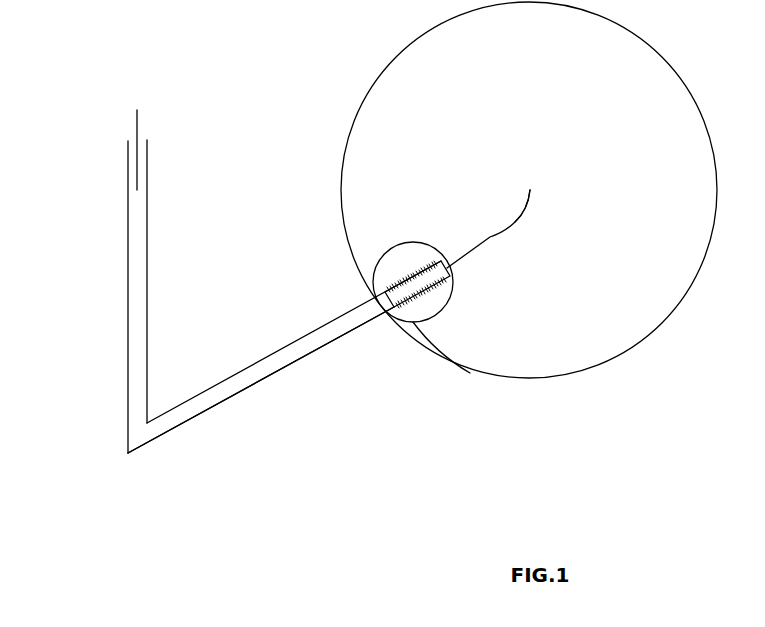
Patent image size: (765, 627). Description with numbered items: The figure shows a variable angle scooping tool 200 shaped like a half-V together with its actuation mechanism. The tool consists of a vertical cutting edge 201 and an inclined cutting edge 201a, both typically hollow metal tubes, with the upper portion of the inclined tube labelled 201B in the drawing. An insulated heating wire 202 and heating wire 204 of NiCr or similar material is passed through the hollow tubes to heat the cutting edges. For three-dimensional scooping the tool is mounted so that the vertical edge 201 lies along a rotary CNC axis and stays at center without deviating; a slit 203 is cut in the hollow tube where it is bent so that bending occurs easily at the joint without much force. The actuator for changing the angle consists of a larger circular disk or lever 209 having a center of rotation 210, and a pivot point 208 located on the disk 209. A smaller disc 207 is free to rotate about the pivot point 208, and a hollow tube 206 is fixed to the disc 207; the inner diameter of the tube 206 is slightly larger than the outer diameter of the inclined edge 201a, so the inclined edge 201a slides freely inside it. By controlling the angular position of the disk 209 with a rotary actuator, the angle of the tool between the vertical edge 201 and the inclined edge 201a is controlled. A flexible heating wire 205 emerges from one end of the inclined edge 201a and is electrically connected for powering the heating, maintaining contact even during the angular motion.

The variable angle scooping tool 200 is at (230, 107).
The vertical cutting edge 201 is at (120, 290).
The insulated heating wire 202 is at (130, 123).
The slit 203 is at (155, 407).
The insulated heating wire 204 is at (122, 455).
The upper tube portion 201B is at (218, 275).
The inclined cutting edge 201a is at (290, 380).
The heating wire 205 is at (513, 235).
The hollow tube 206 is at (418, 300).
The disc 207 is at (432, 328).
The pivot point 208 is at (418, 278).
The circular disk or lever 209 is at (582, 327).
The center of rotation 210 is at (540, 182).